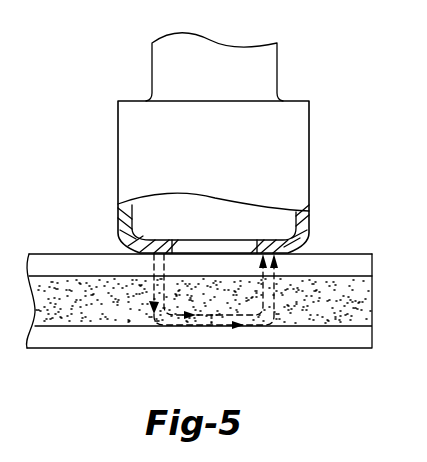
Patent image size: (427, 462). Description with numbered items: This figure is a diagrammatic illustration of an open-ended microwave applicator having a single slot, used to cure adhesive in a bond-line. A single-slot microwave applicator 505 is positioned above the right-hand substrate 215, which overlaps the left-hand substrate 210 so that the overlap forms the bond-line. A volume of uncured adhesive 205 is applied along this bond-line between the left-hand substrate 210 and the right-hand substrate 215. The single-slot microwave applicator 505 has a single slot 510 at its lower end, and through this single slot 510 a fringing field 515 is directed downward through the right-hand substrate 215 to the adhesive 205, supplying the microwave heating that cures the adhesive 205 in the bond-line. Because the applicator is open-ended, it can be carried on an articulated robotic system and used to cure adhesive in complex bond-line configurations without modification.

The single-slot microwave applicator 505 is at (340, 172).
The single slot 510 is at (227, 241).
The fringing field 515 is at (268, 316).
The right-hand substrate 215 is at (62, 268).
The adhesive 205 is at (56, 309).
The left-hand substrate 210 is at (150, 338).